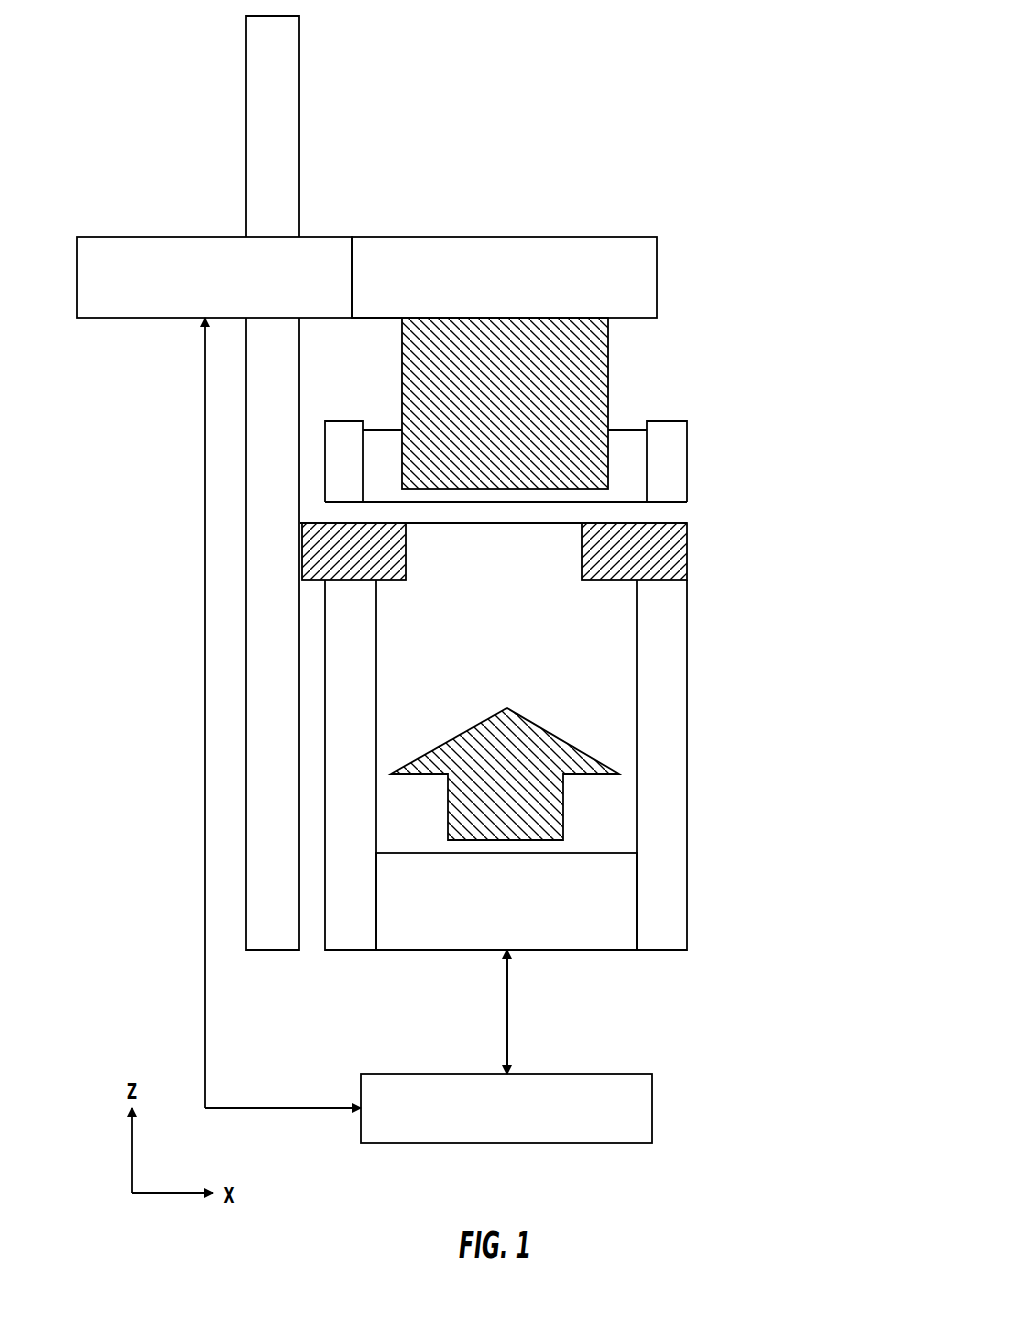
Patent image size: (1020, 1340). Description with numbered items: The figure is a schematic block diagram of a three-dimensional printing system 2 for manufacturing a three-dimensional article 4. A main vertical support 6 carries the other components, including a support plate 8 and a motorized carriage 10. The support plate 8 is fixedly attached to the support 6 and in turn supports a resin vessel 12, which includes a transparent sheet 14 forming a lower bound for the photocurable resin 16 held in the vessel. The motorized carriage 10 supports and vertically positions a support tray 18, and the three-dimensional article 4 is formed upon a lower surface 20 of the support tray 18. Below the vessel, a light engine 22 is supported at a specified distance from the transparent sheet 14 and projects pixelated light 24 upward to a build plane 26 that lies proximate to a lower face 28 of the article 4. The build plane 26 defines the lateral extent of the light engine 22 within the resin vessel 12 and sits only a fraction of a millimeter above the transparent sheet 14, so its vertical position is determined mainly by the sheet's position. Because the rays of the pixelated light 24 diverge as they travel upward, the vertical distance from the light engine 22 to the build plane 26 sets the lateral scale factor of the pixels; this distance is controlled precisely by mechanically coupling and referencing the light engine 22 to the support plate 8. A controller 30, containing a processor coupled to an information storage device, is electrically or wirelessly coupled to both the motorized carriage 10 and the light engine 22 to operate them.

The three-dimensional printing system 2 is at (736, 128).
The three-dimensional article 4 is at (600, 355).
The main vertical support 6 is at (300, 84).
The support plate 8 is at (680, 551).
The motorized carriage 10 is at (100, 245).
The resin vessel 12 is at (675, 464).
The transparent sheet 14 is at (445, 524).
The photocurable resin 16 is at (622, 446).
The support tray 18 is at (650, 263).
The lower surface 20 is at (373, 320).
The light engine 22 is at (608, 898).
The pixelated light 24 is at (578, 760).
The build plane 26 is at (480, 496).
The lower face 28 is at (520, 491).
The controller 30 is at (635, 1112).